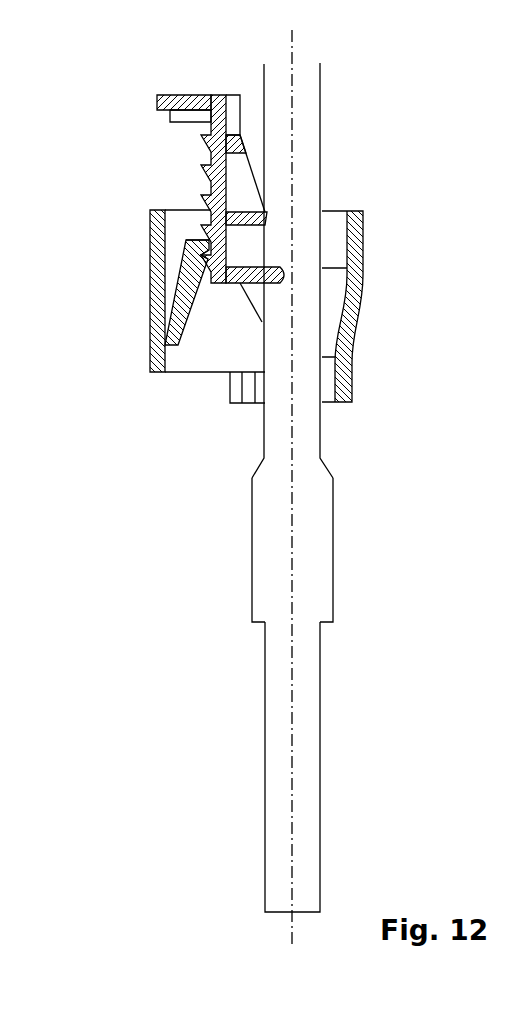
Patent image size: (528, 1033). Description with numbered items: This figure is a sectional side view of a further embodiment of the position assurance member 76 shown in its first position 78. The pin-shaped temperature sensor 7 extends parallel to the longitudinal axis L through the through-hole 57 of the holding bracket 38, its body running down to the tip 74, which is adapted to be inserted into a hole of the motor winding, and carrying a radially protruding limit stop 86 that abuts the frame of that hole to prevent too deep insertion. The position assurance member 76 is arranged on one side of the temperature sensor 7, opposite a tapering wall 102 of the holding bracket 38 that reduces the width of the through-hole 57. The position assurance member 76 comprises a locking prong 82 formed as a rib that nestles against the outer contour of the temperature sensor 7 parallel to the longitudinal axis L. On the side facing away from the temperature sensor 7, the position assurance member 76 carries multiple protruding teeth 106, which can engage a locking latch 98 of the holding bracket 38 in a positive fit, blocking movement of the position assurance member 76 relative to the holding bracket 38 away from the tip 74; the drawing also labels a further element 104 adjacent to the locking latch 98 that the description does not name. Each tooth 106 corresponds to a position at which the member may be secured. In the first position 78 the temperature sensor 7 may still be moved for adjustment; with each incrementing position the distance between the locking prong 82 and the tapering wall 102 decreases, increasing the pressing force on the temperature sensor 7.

The first position 78 is at (104, 60).
The position assurance member 76 is at (218, 103).
The temperature sensor 7 is at (310, 113).
The locking prong 82 is at (238, 193).
The through-hole 57 is at (333, 245).
The locking latch 98 is at (189, 241).
The teeth 106 is at (205, 257).
The pawl arm 104 is at (205, 285).
The tapering wall 102 is at (348, 317).
The holding bracket 38 is at (207, 360).
The limit stop 86 is at (258, 623).
The tip 74 is at (280, 795).
The longitudinal axis L is at (292, 935).